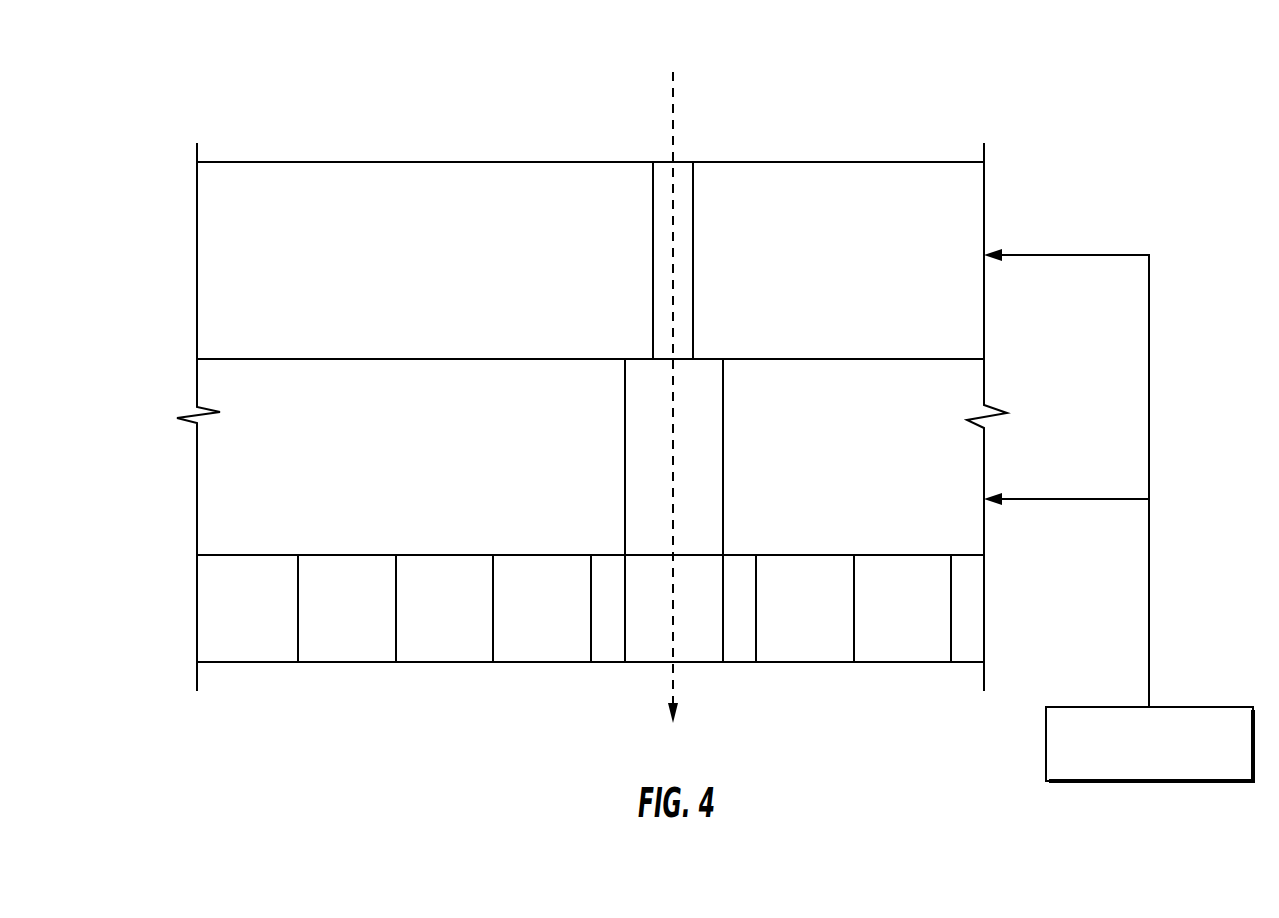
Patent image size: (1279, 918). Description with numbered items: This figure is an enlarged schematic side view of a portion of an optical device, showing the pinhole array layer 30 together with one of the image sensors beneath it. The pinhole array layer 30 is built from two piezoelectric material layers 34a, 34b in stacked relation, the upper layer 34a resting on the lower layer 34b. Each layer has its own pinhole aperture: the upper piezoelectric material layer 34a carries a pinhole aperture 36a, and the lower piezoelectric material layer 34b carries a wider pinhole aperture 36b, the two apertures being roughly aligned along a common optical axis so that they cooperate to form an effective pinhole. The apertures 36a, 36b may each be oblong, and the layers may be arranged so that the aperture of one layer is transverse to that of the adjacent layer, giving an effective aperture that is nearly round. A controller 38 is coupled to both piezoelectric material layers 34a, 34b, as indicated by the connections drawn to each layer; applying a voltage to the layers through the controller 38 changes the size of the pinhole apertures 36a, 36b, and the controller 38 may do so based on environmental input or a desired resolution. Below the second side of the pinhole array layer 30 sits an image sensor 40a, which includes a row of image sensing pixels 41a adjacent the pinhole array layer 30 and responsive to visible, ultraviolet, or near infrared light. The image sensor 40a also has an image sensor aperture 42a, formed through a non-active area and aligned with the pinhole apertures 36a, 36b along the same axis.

The pinhole array layer 30 is at (190, 242).
The piezoelectric material layer 34a is at (255, 325).
The piezoelectric material layer 34b is at (242, 483).
The pinhole aperture 36a is at (683, 175).
The pinhole aperture 36b is at (698, 465).
The controller 38 is at (1076, 781).
The image sensor 40a is at (178, 589).
The image sensing pixel 41a is at (437, 633).
The image sensor aperture 42a is at (650, 665).